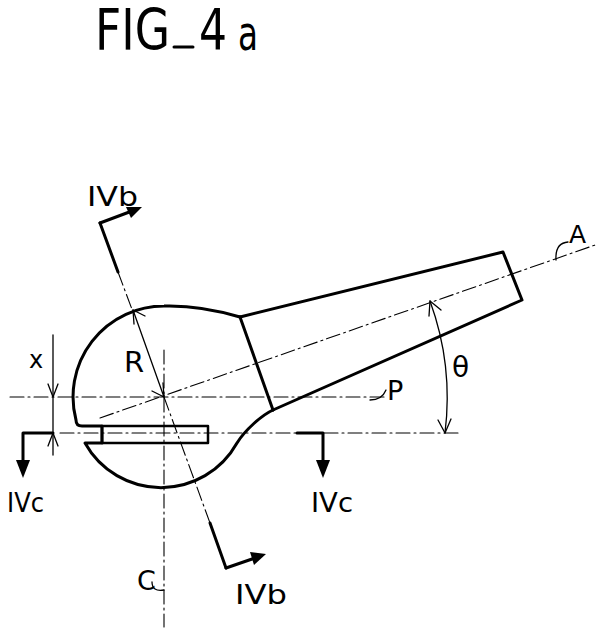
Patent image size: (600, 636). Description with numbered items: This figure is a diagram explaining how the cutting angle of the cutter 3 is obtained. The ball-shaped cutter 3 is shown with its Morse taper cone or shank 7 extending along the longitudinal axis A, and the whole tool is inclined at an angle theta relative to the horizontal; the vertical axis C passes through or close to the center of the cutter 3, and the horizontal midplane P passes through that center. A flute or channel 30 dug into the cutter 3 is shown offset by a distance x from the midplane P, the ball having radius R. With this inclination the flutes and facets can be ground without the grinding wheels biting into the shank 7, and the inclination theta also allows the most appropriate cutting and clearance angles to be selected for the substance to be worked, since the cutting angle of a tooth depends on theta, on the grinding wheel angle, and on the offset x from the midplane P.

The cutter 3 is at (182, 323).
The shank 7 is at (378, 302).
The flute 30 is at (92, 434).